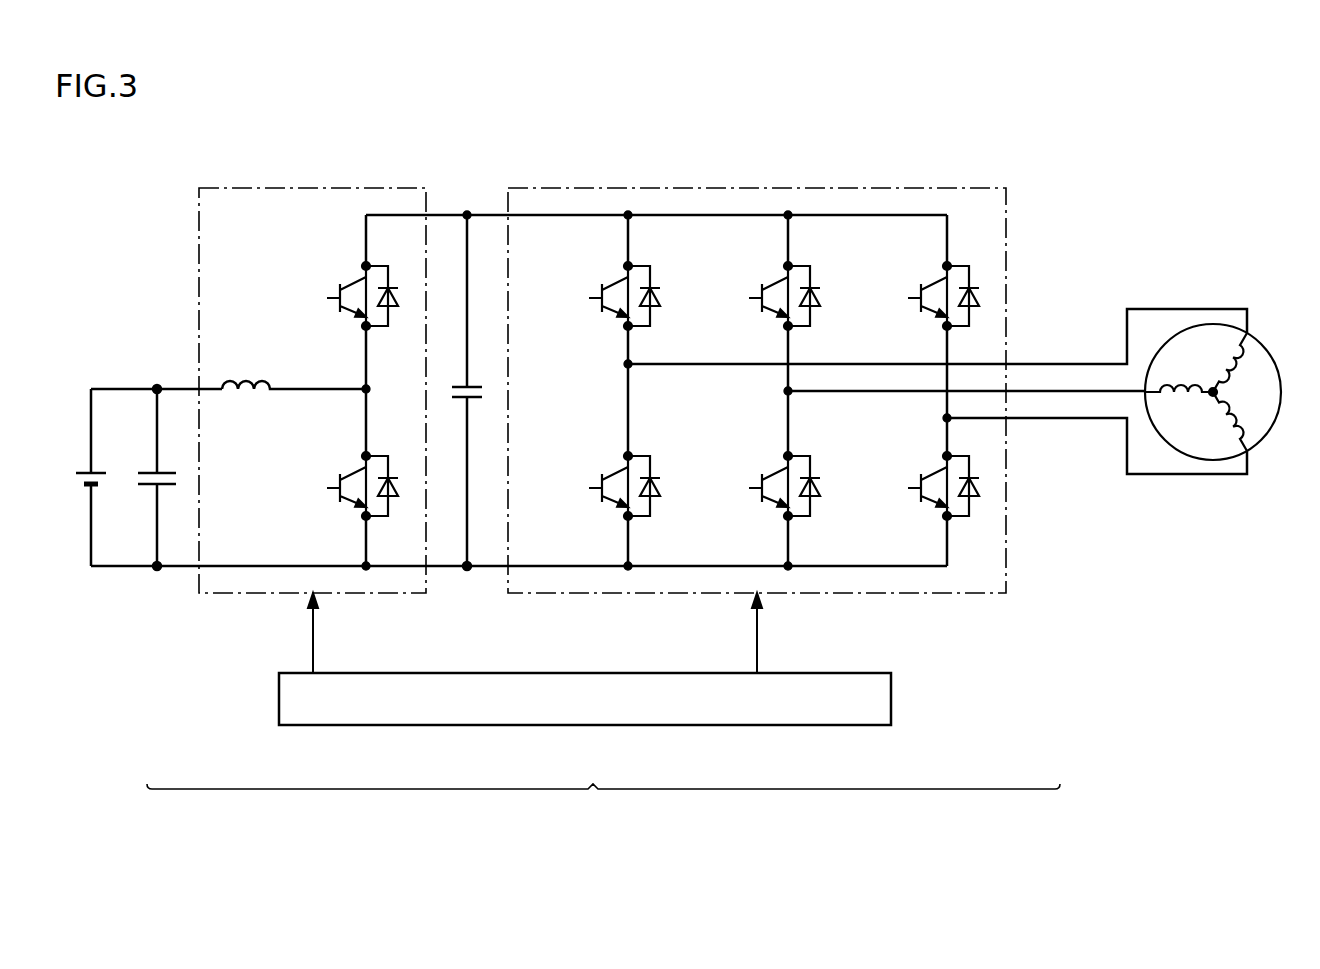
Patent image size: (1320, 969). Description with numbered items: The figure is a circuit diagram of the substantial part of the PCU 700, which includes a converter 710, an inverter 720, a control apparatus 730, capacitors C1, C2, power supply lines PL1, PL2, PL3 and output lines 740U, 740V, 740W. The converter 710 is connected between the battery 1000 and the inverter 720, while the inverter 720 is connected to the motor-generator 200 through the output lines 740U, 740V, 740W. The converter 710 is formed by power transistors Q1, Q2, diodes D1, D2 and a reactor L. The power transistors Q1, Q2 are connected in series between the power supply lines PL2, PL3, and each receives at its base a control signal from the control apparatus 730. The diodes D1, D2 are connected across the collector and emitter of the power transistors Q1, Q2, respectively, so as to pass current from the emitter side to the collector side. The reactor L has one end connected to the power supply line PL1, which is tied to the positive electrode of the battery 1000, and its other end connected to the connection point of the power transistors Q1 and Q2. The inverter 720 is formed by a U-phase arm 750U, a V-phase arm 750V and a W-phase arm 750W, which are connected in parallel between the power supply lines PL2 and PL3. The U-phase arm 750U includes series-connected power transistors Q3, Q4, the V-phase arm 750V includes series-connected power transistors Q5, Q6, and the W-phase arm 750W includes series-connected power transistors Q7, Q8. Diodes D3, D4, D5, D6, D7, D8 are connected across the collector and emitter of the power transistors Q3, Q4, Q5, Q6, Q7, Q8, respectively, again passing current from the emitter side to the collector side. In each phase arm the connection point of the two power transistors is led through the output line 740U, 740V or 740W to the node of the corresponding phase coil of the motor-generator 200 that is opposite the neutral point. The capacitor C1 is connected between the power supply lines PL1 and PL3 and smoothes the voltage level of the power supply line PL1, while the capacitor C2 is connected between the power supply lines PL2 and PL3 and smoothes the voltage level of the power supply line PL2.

The battery 1000 is at (83, 473).
The power supply line PL1 is at (140, 388).
The capacitor C1 is at (165, 472).
The reactor L is at (243, 386).
The converter 710 is at (320, 187).
The power transistor Q1 is at (341, 282).
The diode D1 is at (397, 291).
The power transistor Q2 is at (341, 472).
The diode D2 is at (397, 481).
The power supply line PL2 is at (446, 213).
The capacitor C2 is at (472, 386).
The power supply line PL3 is at (440, 567).
The inverter 720 is at (960, 187).
The power transistor Q3 is at (603, 282).
The diode D3 is at (659, 291).
The power transistor Q4 is at (603, 472).
The diode D4 is at (659, 481).
The power transistor Q5 is at (763, 282).
The diode D5 is at (819, 291).
The power transistor Q6 is at (763, 472).
The diode D6 is at (819, 481).
The power transistor Q7 is at (922, 282).
The diode D7 is at (978, 291).
The power transistor Q8 is at (922, 472).
The diode D8 is at (974, 495).
The U-phase arm 750U is at (617, 371).
The output line 740U is at (660, 368).
The V-phase arm 750V is at (780, 396).
The output line 740V is at (840, 394).
The W-phase arm 750W is at (937, 423).
The output line 740W is at (980, 420).
The motor-generator 200 is at (1275, 365).
The control apparatus 730 is at (857, 726).
The PCU 700 is at (603, 803).